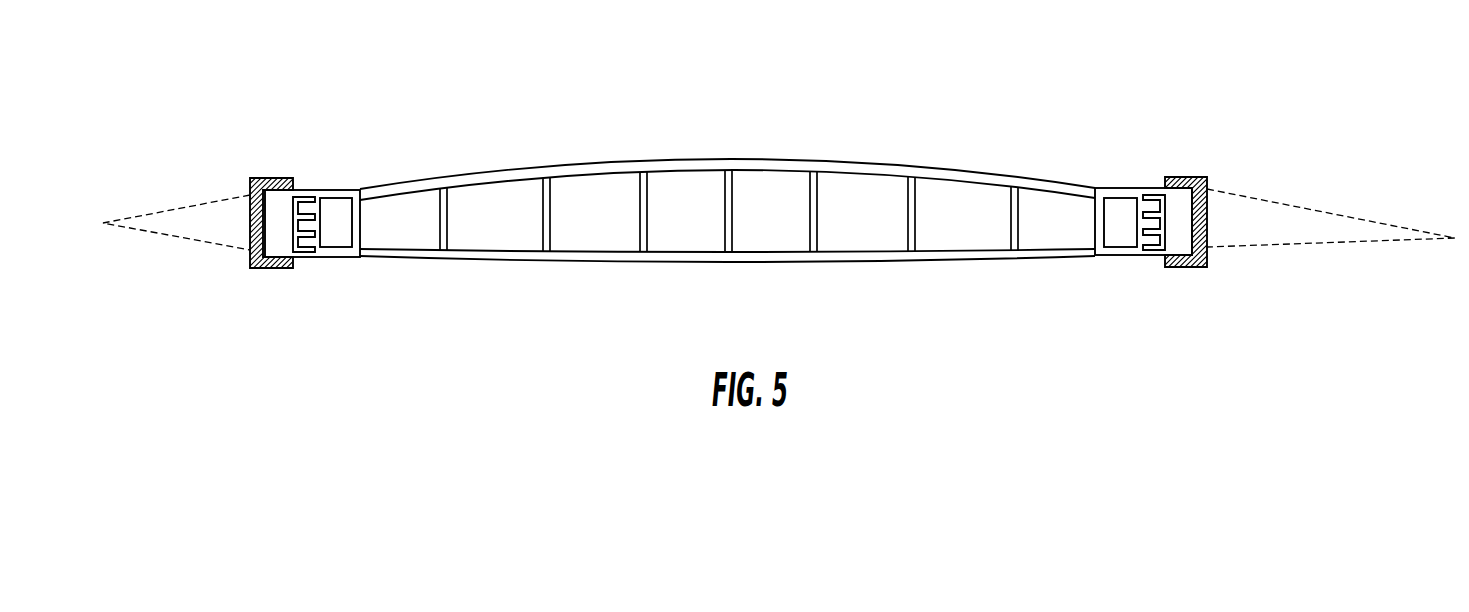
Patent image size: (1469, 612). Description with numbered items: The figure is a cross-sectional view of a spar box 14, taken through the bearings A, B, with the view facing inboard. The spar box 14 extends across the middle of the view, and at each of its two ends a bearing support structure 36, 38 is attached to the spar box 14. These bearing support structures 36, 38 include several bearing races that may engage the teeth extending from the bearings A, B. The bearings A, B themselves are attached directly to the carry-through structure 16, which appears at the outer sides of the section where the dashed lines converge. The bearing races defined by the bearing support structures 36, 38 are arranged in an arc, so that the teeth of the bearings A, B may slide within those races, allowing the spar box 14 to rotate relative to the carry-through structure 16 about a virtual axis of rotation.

The spar box 14 is at (727, 150).
The carry-through structure 16 is at (260, 282).
The bearing support structure 36 is at (327, 180).
The bearing support structure 38 is at (1148, 178).
The bearing A is at (282, 212).
The bearing B is at (1180, 208).